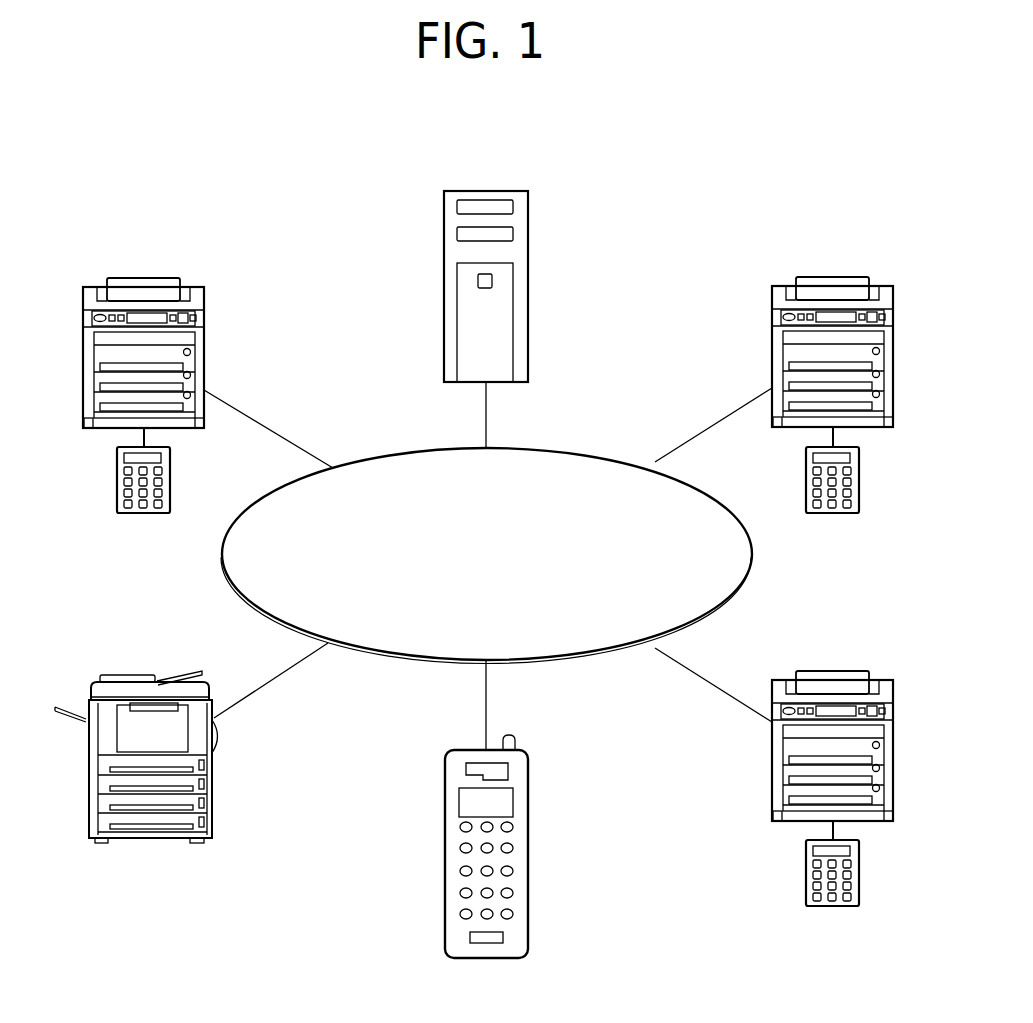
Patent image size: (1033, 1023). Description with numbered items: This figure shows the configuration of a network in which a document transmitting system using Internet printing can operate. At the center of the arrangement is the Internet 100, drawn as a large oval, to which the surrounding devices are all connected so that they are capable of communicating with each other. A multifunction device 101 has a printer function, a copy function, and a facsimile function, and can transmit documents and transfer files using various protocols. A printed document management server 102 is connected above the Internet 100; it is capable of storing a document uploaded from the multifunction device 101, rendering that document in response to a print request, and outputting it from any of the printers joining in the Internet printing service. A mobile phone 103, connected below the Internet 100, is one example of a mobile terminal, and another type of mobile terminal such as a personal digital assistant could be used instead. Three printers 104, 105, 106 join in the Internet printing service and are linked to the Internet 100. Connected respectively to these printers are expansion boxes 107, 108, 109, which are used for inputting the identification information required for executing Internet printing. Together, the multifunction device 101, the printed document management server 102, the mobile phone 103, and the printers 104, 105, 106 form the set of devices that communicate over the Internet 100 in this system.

The Internet 100 is at (570, 451).
The multifunction device 101 is at (116, 677).
The printed document management server 102 is at (494, 189).
The mobile phone 103 is at (457, 750).
The printer 104 is at (110, 279).
The printer 105 is at (857, 278).
The printer 106 is at (857, 672).
The expansion box 107 is at (142, 513).
The expansion box 108 is at (840, 513).
The expansion box 109 is at (845, 906).